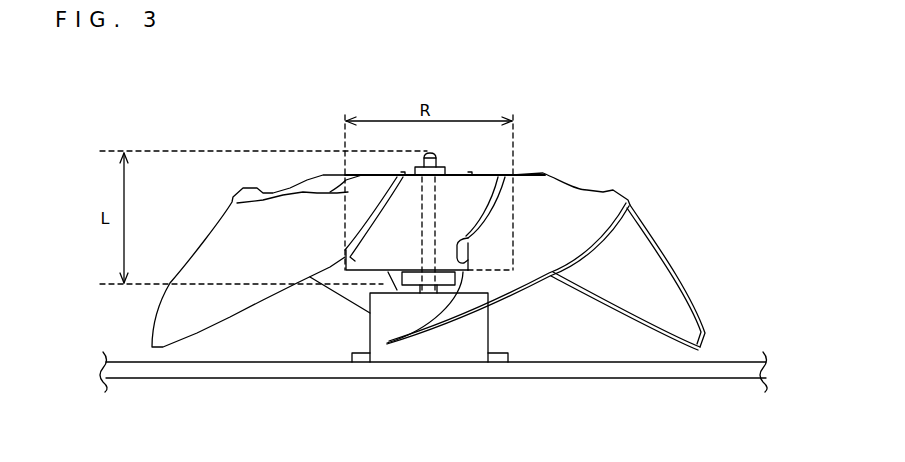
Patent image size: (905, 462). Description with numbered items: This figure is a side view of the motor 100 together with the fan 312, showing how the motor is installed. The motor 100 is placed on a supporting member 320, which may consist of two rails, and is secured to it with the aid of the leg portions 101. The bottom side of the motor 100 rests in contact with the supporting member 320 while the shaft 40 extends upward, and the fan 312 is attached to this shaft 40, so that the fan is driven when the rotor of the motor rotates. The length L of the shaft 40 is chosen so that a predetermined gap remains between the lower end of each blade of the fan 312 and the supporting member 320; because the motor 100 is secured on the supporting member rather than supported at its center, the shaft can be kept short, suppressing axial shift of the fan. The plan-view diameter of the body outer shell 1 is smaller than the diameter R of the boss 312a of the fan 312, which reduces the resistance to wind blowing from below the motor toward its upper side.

The shaft 40 is at (433, 154).
The boss 312a is at (477, 198).
The fan 312 is at (594, 190).
The motor 100 is at (353, 336).
The body outer shell 1 is at (490, 331).
The leg portions 101 is at (508, 357).
The supporting member 320 is at (687, 378).